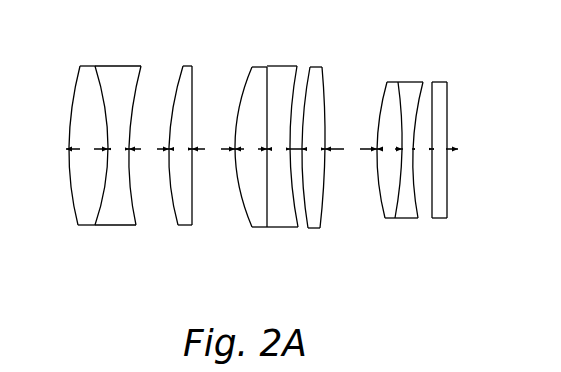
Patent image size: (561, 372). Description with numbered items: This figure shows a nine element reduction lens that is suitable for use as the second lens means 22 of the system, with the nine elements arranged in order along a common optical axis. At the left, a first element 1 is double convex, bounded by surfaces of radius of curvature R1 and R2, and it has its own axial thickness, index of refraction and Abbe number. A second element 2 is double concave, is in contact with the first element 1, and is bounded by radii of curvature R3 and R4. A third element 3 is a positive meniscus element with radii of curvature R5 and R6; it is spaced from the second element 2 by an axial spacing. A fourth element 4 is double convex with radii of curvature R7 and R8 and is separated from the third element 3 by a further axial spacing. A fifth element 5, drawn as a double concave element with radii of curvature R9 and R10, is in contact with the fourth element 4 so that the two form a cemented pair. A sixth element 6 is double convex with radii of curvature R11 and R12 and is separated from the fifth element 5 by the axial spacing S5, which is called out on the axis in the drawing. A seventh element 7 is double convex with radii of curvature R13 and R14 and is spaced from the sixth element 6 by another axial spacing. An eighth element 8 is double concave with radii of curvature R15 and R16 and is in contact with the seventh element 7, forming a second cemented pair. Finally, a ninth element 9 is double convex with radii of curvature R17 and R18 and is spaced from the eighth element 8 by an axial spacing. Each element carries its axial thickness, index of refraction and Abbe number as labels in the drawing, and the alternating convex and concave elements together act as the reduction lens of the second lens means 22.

The second lens means 22 is at (289, 162).
The first element 1 is at (78, 125).
The second element 2 is at (114, 165).
The third element 3 is at (189, 126).
The fourth element 4 is at (268, 148).
The fifth element 5 is at (301, 167).
The sixth element 6 is at (344, 154).
The seventh element 7 is at (401, 154).
The eighth element 8 is at (428, 175).
The ninth element 9 is at (462, 128).
The radius of curvature R1 is at (78, 78).
The radius of curvature R2 is at (97, 70).
The radius of curvature R3 is at (96, 212).
The radius of curvature R4 is at (136, 207).
The radius of curvature R5 is at (180, 73).
The radius of curvature R6 is at (200, 75).
The radius of curvature R7 is at (243, 208).
The radius of curvature R8 is at (268, 218).
The radius of curvature R9 is at (253, 71).
The radius of curvature R10 is at (299, 80).
The radius of curvature R11 is at (290, 212).
The radius of curvature R12 is at (325, 207).
The radius of curvature R13 is at (387, 95).
The radius of curvature R14 is at (398, 93).
The radius of curvature R15 is at (392, 210).
The radius of curvature R16 is at (421, 210).
The radius of curvature R17 is at (428, 87).
The radius of curvature R18 is at (448, 97).
The axial spacing S5 is at (290, 147).